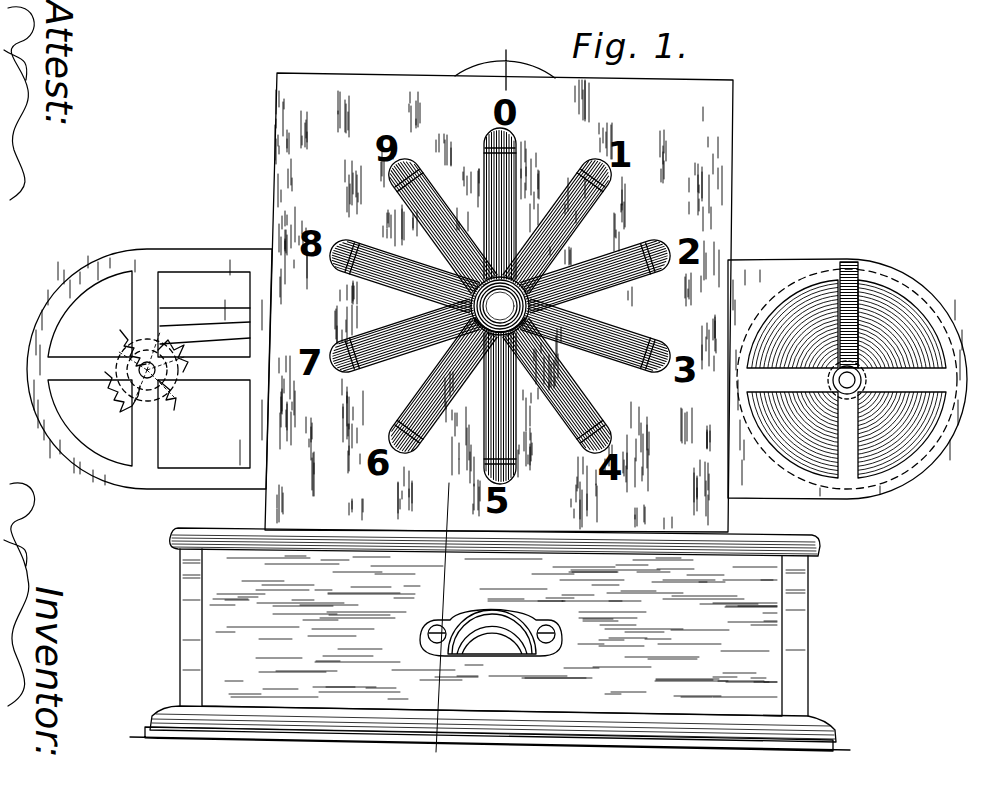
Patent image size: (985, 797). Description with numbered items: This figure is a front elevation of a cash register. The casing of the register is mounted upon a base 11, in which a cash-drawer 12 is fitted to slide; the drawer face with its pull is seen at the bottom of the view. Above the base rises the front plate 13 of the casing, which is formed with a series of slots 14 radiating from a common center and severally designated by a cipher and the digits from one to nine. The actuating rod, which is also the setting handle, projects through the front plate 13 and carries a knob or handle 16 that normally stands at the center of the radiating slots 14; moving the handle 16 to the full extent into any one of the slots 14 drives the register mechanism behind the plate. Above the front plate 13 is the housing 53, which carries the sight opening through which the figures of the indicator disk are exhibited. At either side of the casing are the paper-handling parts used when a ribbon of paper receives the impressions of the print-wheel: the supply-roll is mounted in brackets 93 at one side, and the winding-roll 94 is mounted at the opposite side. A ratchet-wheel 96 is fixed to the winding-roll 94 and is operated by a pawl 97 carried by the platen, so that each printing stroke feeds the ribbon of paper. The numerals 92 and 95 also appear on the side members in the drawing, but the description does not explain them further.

The base 11 is at (800, 608).
The cash-drawer 12 is at (504, 624).
The front plate 13 is at (693, 218).
The slots 14 is at (517, 200).
The knob or handle 16 is at (500, 306).
The housing 53 is at (480, 67).
The ratchet disc 92 is at (900, 310).
The brackets 93 is at (847, 379).
The winding-roll 94 is at (141, 380).
The left side plate 95 is at (149, 369).
The ratchet-wheel 96 is at (118, 346).
The pawl 97 is at (196, 320).